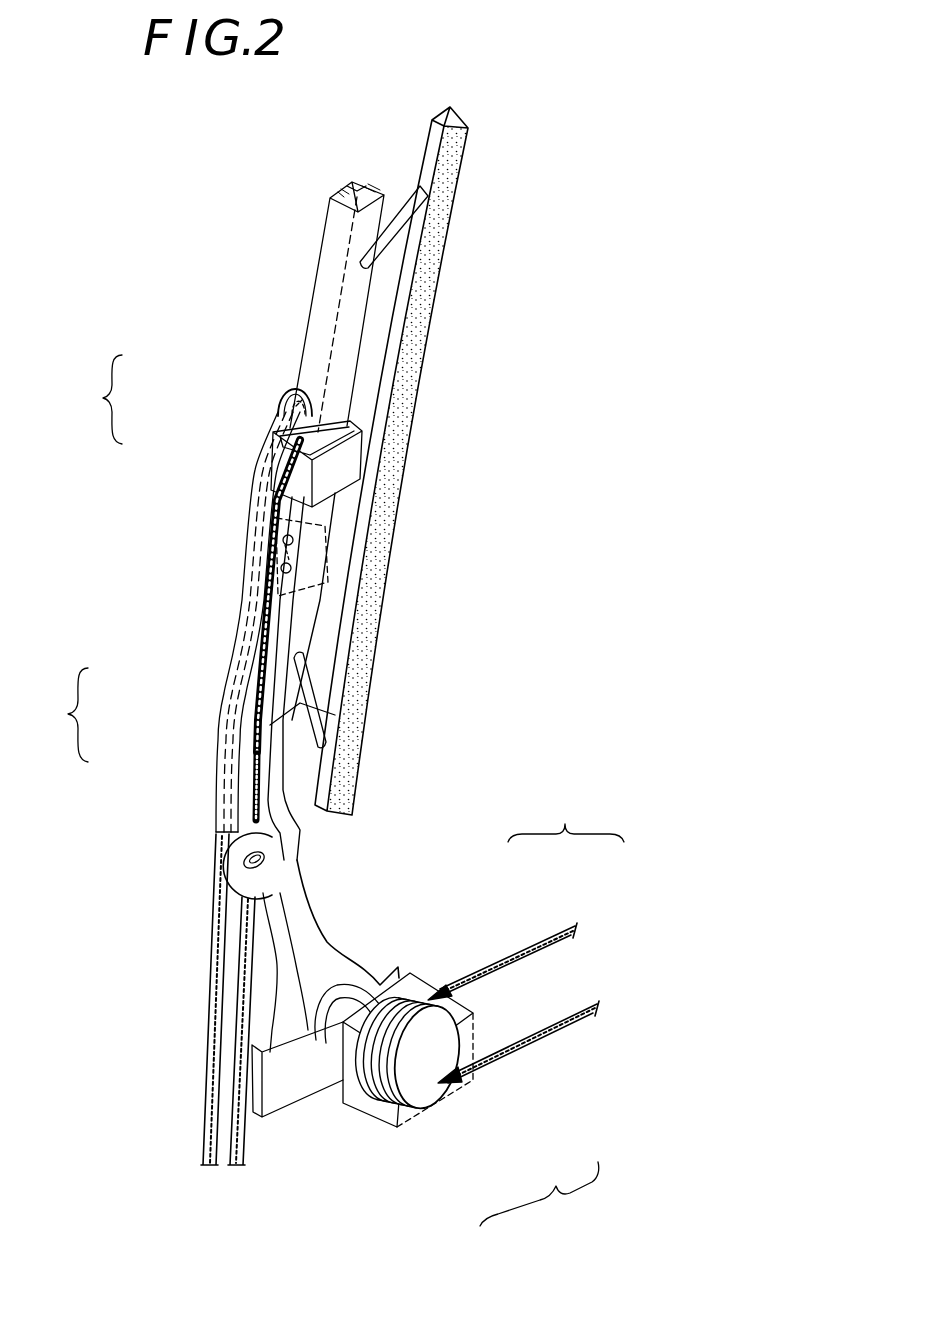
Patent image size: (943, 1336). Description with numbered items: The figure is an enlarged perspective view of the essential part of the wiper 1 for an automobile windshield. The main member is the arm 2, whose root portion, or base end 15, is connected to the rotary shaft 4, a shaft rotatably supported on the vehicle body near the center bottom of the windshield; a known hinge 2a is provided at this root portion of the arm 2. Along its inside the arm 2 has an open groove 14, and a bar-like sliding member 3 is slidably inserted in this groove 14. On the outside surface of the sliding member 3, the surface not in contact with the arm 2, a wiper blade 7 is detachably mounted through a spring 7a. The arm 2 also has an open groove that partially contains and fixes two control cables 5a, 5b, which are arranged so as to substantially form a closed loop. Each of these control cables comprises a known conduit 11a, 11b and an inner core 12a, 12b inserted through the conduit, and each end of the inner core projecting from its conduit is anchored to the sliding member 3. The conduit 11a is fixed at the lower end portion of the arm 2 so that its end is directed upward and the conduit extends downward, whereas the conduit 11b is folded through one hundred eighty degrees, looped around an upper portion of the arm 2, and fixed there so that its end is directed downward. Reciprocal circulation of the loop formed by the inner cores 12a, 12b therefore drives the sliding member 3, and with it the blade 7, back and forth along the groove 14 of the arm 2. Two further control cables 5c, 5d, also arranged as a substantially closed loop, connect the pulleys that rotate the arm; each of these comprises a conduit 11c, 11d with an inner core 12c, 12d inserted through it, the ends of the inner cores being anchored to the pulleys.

The wiper 1 is at (492, 578).
The arm 2 is at (238, 836).
The hinge 2a is at (238, 874).
The sliding member 3 is at (318, 310).
The rotary shaft 4 is at (397, 968).
The control cable 5a is at (215, 1040).
The control cable 5b is at (242, 1090).
The control cable 5c is at (539, 1200).
The control cable 5d is at (566, 816).
The wiper blade 7 is at (400, 434).
The spring 7a is at (316, 712).
The conduit 11a is at (256, 790).
The conduit 11b is at (282, 398).
The conduit 11c is at (517, 1062).
The conduit 11d is at (550, 930).
The inner core 12a is at (266, 722).
The inner core 12b is at (272, 426).
The inner core 12c is at (447, 1088).
The inner core 12d is at (440, 987).
The open groove 14 is at (286, 594).
The base end 15 is at (322, 950).